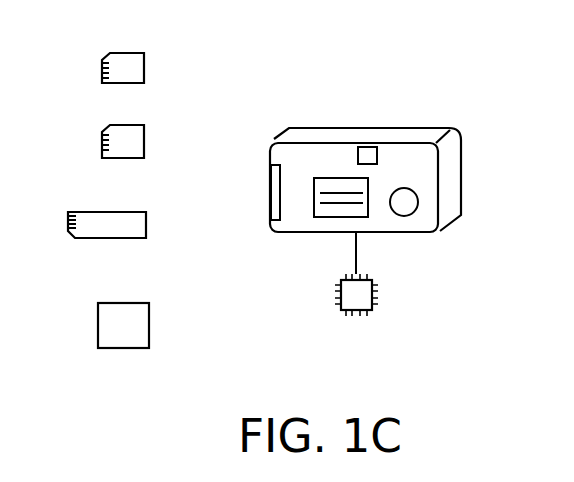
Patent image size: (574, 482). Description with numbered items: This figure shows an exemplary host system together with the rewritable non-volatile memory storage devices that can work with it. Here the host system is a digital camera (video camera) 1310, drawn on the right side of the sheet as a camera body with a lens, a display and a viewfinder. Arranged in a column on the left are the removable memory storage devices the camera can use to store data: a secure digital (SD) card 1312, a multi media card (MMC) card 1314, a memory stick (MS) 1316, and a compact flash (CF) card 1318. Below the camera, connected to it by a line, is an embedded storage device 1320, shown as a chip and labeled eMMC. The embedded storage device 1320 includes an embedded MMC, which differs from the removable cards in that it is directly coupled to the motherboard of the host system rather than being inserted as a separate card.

The digital camera (video camera) 1310 is at (461, 165).
The secure digital (SD) card 1312 is at (144, 59).
The multi media card (MMC) card 1314 is at (144, 132).
The memory stick (MS) 1316 is at (146, 222).
The compact flash (CF) card 1318 is at (149, 318).
The embedded storage device 1320 is at (378, 296).